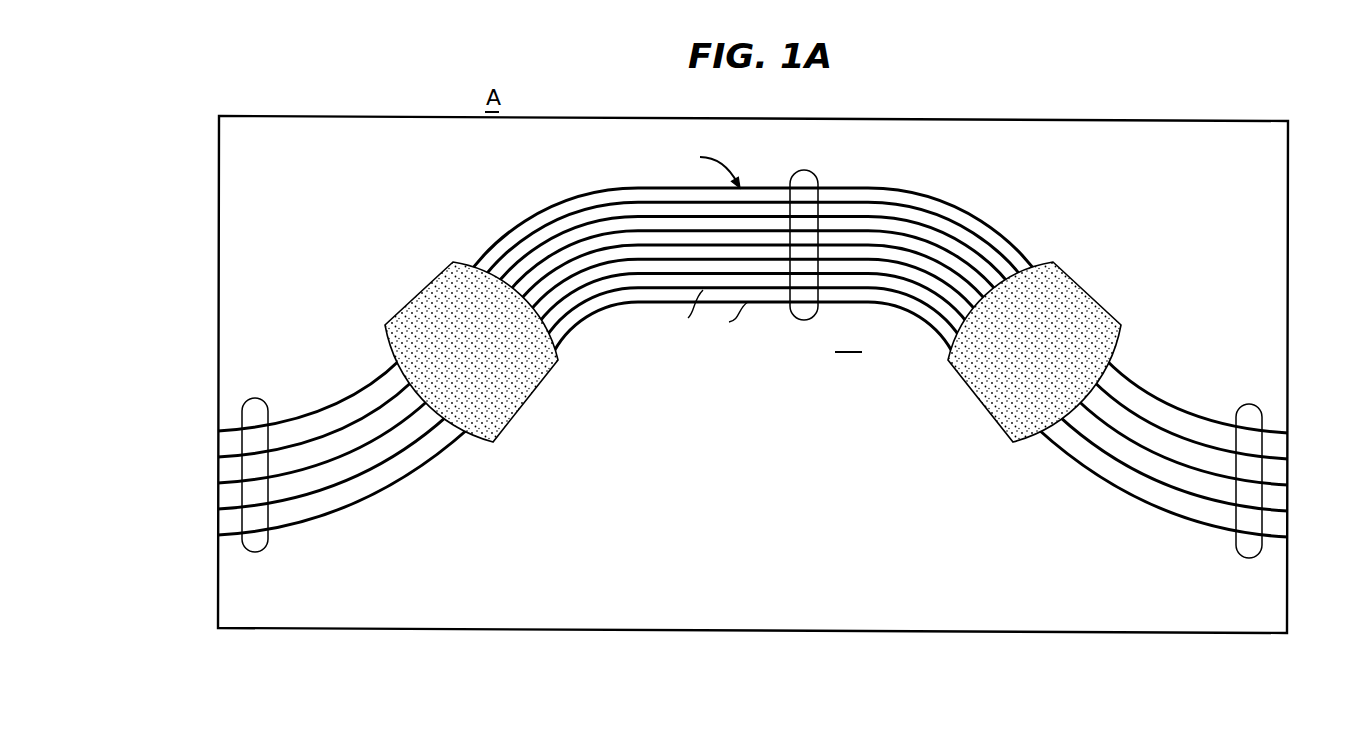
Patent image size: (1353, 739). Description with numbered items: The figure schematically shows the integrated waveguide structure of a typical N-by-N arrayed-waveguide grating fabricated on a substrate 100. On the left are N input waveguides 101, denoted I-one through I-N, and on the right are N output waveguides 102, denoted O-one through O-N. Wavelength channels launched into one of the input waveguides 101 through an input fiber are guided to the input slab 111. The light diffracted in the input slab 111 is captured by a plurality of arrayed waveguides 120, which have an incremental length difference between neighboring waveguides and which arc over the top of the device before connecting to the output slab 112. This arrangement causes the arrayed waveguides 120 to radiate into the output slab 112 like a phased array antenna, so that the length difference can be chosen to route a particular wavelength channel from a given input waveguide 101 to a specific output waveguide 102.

The substrate 100 is at (632, 640).
The input waveguides 101 is at (257, 400).
The output waveguides 102 is at (1248, 404).
The input slab 111 is at (388, 297).
The output slab 112 is at (1097, 290).
The arrayed waveguides 120 is at (815, 174).